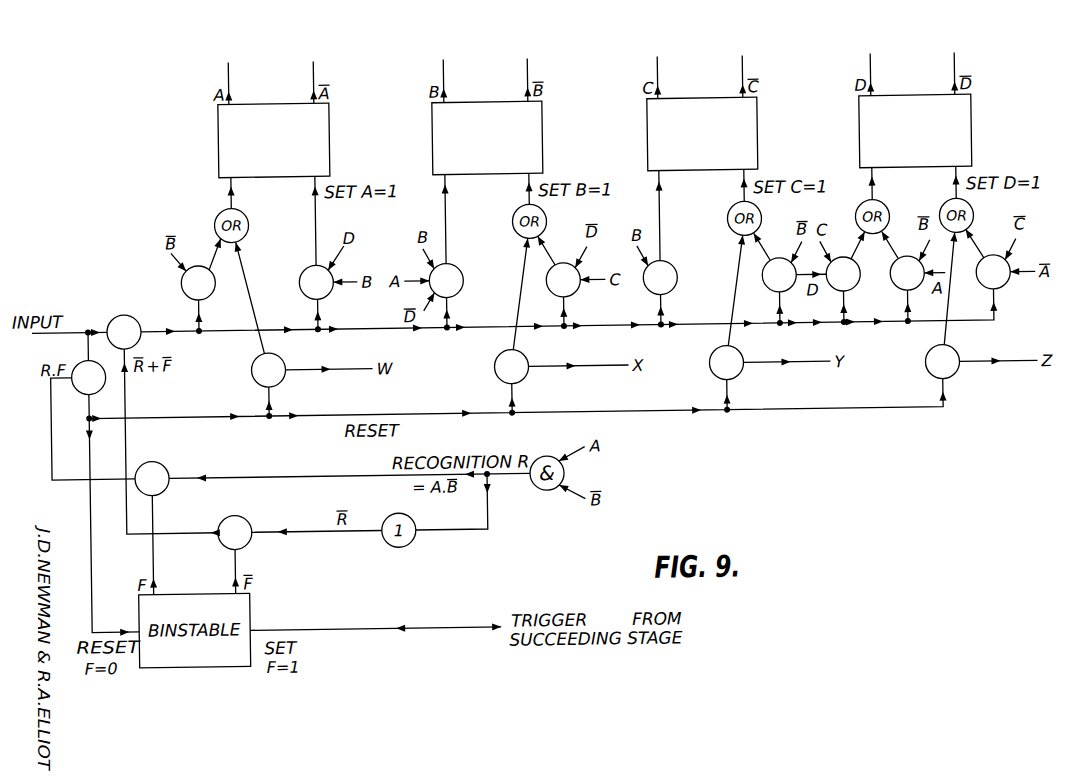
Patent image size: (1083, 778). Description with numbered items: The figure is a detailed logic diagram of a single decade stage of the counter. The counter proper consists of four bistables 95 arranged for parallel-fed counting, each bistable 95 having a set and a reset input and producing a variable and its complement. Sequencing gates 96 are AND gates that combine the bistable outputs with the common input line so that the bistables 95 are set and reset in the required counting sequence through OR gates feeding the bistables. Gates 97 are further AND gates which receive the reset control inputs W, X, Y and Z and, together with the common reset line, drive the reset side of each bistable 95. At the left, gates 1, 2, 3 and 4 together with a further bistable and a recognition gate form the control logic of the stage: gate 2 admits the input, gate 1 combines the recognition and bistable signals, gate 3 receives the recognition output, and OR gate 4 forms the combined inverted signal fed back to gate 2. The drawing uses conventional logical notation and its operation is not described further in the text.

The AND gate 1 is at (83, 388).
The AND gate 2 is at (113, 329).
The AND gate 3 is at (163, 474).
The OR gate 4 is at (244, 526).
The bistable 95 is at (595, 136).
The sequencing gate 96 is at (979, 299).
The reset control gate 97 is at (954, 360).